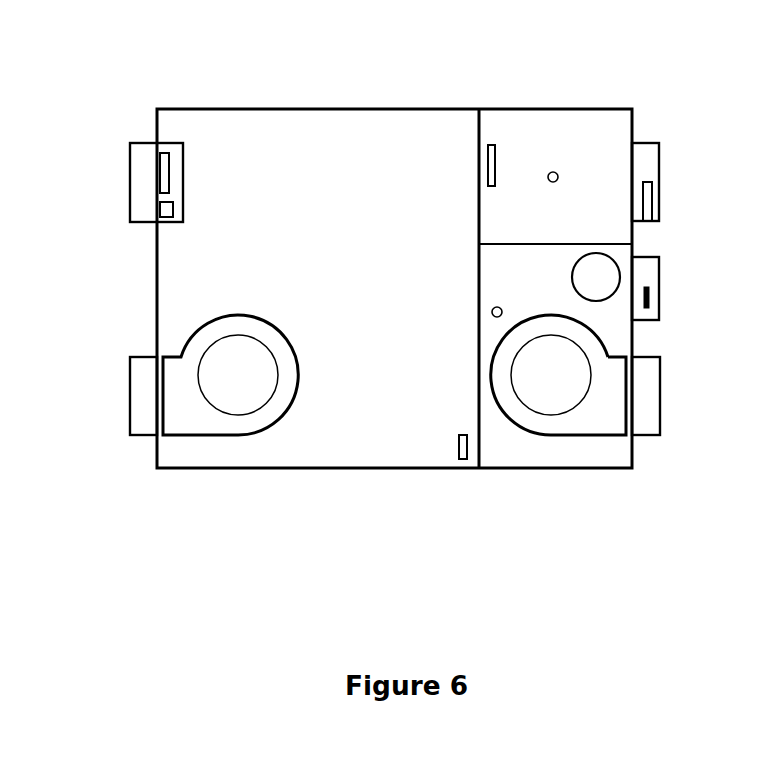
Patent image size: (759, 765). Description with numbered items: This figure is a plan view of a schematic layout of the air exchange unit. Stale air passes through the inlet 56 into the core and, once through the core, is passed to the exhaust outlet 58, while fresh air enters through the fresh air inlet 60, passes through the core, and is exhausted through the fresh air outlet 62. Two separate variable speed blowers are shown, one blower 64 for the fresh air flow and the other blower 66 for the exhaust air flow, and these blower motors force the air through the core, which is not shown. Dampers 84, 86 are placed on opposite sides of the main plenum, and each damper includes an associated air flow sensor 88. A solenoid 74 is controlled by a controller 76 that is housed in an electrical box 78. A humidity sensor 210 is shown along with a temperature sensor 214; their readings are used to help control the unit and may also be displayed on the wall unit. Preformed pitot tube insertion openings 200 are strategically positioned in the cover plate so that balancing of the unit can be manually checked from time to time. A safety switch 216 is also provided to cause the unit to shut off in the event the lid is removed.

The inlet 56 is at (138, 143).
The exhaust outlet 58 is at (651, 428).
The fresh air inlet 60 is at (647, 143).
The fresh air outlet 62 is at (142, 415).
The variable speed blower 64 is at (223, 423).
The variable speed blower 66 is at (578, 420).
The solenoid 74 is at (607, 268).
The controller 76 is at (650, 293).
The electrical box 78 is at (653, 317).
The damper 84 is at (179, 147).
The damper 86 is at (496, 160).
The air flow sensor 88 is at (167, 153).
The pitot tube insertion opening 200 is at (493, 307).
The humidity sensor 210 is at (168, 218).
The temperature sensor 214 is at (654, 186).
The safety switch 216 is at (463, 460).